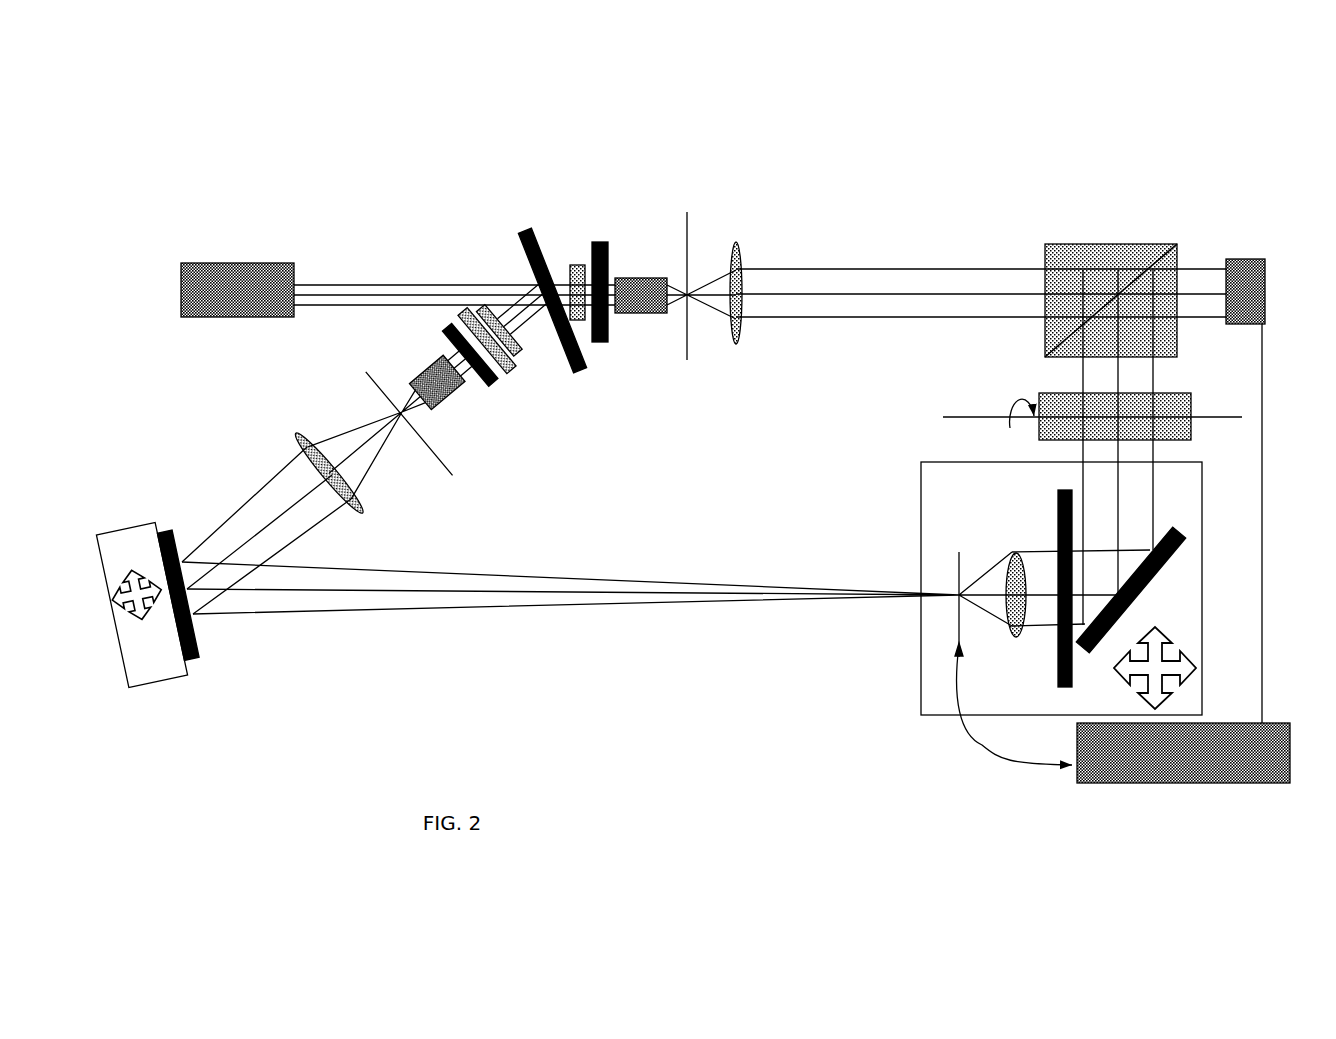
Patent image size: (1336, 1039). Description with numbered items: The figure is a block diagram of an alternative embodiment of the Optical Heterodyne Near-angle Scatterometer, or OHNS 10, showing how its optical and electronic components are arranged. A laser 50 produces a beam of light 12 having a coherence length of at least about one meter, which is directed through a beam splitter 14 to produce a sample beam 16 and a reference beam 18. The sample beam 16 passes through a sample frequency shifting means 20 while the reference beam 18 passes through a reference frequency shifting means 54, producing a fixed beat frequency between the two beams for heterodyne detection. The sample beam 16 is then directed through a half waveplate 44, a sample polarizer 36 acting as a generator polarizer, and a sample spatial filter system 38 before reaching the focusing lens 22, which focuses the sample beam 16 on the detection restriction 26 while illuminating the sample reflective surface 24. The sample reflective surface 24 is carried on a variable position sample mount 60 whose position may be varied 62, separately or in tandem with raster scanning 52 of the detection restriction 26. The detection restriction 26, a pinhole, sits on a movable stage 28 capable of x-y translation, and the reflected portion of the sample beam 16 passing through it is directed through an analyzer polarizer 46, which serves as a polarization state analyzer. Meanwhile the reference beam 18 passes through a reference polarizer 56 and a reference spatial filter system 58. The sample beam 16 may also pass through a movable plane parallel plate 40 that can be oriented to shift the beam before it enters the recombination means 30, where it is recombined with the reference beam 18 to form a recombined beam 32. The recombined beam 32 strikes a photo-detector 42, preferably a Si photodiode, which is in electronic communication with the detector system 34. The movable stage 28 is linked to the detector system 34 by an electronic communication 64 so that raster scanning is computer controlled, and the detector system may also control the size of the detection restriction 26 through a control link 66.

The Optical Heterodyne Near-angle Scatterometer 10 is at (778, 177).
The beam of light 12 is at (408, 268).
The beam splitter 14 is at (518, 232).
The sample beam 16 is at (532, 337).
The reference beam 18 is at (561, 282).
The sample frequency shifting means 20 is at (520, 360).
The focusing lens 22 is at (302, 433).
The sample reflective surface 24 is at (162, 532).
The detection restriction 26 is at (953, 550).
The movable stage 28 is at (924, 620).
The recombination means 30 is at (1045, 243).
The recombined beam 32 is at (1192, 269).
The detector system 34 is at (1268, 473).
The sample polarizer 36 is at (443, 326).
The sample spatial filter system 38 is at (440, 426).
The movable plane parallel plate 40 is at (980, 413).
The photo-detector 42 is at (1250, 258).
The half waveplate 44 is at (508, 379).
The analyzer polarizer 46 is at (1058, 670).
The laser 50 is at (242, 262).
The raster scanning 52 is at (1130, 611).
The reference frequency shifting means 54 is at (582, 322).
The reference polarizer 56 is at (590, 238).
The reference spatial filter system 58 is at (670, 238).
The variable position sample mount 60 is at (133, 690).
The variation of sample mount position 62 is at (138, 613).
The electronic communication 64 is at (1238, 721).
The detector system control of detection restriction 66 is at (982, 742).